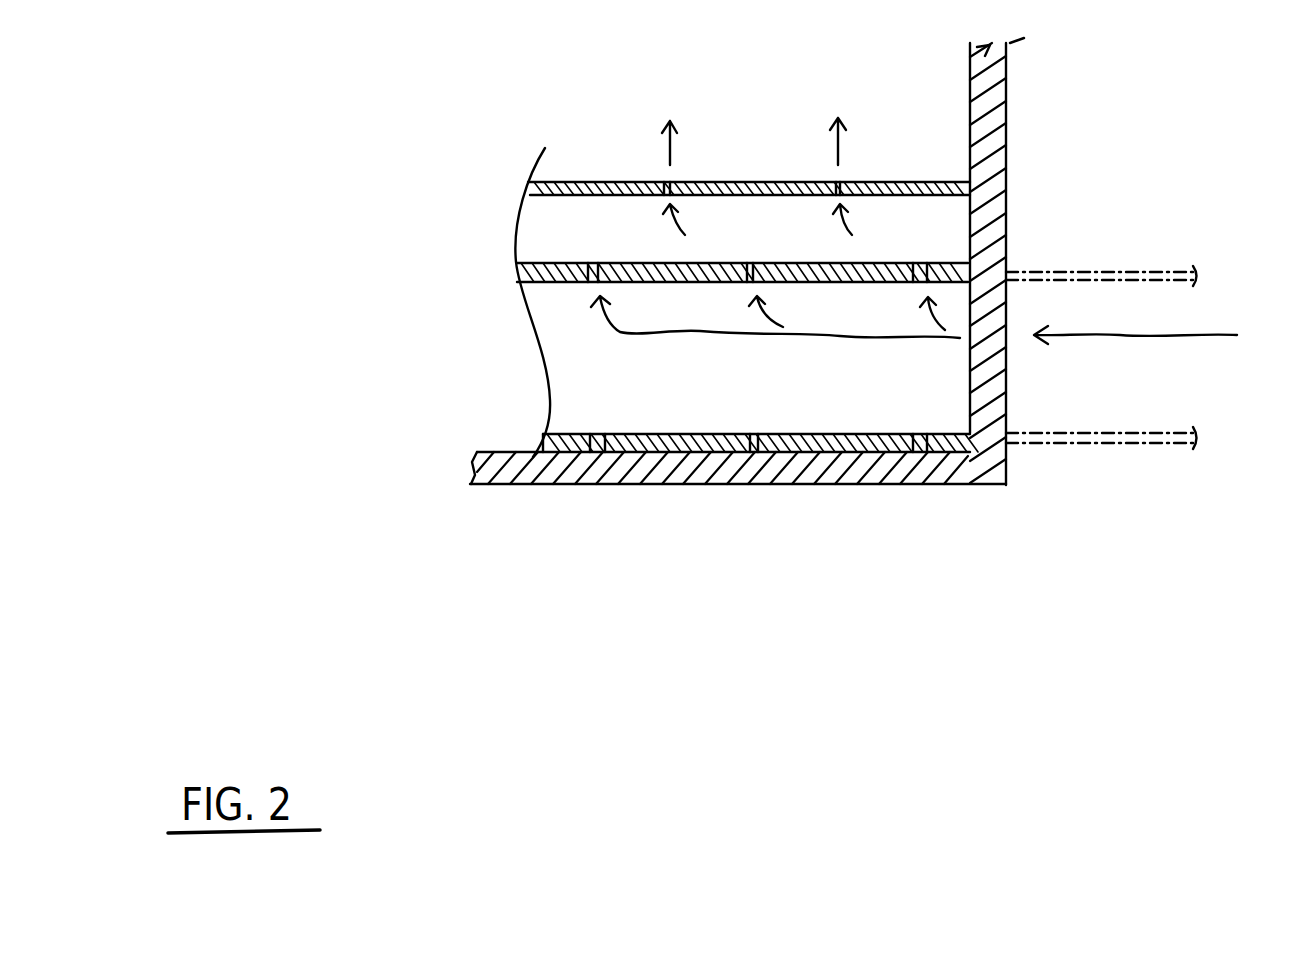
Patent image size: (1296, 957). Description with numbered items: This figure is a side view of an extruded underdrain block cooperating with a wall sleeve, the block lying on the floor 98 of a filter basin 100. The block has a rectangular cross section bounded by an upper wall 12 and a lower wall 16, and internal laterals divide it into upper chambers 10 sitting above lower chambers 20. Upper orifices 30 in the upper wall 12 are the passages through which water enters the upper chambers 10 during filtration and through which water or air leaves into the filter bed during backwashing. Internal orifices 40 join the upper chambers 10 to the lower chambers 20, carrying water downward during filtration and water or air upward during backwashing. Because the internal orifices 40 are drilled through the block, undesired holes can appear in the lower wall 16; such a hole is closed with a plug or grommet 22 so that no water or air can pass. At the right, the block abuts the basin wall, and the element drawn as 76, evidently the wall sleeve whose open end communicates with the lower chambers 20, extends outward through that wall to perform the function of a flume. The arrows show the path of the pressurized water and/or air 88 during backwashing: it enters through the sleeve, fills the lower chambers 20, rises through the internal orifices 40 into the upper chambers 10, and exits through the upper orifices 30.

The upper chambers 10 is at (945, 222).
The upper wall 12 is at (933, 177).
The lower wall 16 is at (630, 446).
The lower chambers 20 is at (797, 407).
The plug or grommet 22 is at (590, 447).
The upper orifices 30 is at (664, 181).
The internal orifices 40 is at (595, 263).
The conduit 76 is at (1128, 440).
The pressurized water and/or air 88 is at (1155, 339).
The floor 98 is at (945, 485).
The filter basin 100 is at (1009, 505).